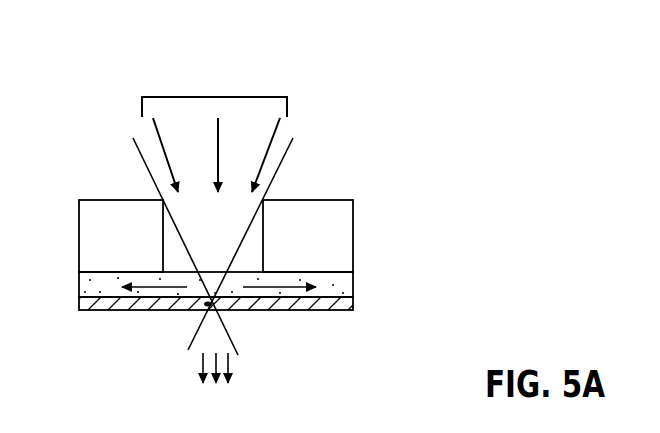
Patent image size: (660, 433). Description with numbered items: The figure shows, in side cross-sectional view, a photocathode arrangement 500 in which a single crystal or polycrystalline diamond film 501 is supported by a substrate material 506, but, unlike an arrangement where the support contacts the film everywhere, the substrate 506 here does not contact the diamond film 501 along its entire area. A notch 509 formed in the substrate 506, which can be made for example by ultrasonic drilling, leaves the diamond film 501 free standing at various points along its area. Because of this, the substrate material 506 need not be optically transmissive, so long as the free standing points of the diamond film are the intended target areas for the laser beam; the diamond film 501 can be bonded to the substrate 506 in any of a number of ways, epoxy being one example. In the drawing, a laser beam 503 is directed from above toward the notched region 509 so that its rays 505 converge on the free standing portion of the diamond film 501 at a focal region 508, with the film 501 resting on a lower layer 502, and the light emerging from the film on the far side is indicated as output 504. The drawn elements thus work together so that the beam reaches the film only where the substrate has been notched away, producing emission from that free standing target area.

The laser annealing system 500 is at (428, 118).
The diamond film 501 is at (353, 280).
The substrate 502 is at (353, 300).
The laser beam 503 is at (266, 84).
The transmitted light 504 is at (242, 391).
The focused beam rays 505 is at (210, 303).
The substrate 506 is at (353, 232).
The focal point 508 is at (212, 313).
The notch 509 is at (142, 114).